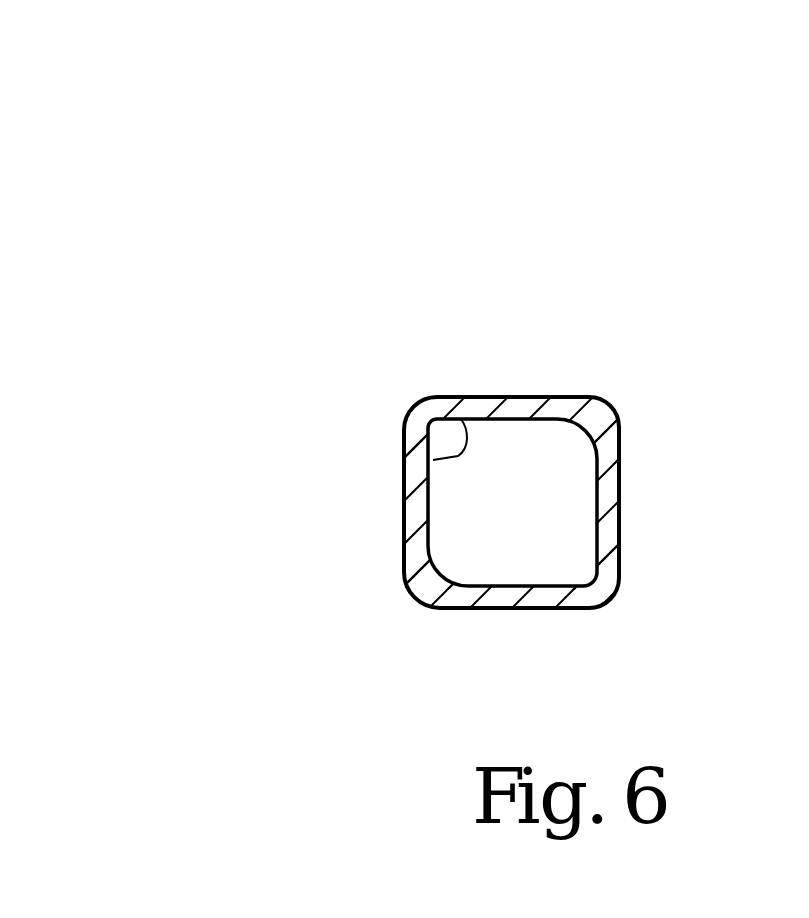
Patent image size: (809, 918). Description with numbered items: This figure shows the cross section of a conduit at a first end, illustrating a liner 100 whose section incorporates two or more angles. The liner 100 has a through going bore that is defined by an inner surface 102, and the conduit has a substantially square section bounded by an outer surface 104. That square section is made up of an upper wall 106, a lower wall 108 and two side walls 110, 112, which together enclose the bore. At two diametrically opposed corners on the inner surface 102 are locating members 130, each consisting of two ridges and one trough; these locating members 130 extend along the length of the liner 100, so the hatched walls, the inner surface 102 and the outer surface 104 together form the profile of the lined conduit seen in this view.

The liner 100 is at (233, 188).
The inner surface 102 is at (433, 460).
The outer surface 104 is at (488, 397).
The upper wall 106 is at (531, 412).
The lower wall 108 is at (510, 600).
The side wall 110 is at (410, 537).
The side wall 112 is at (610, 495).
The locating member 130 is at (583, 435).